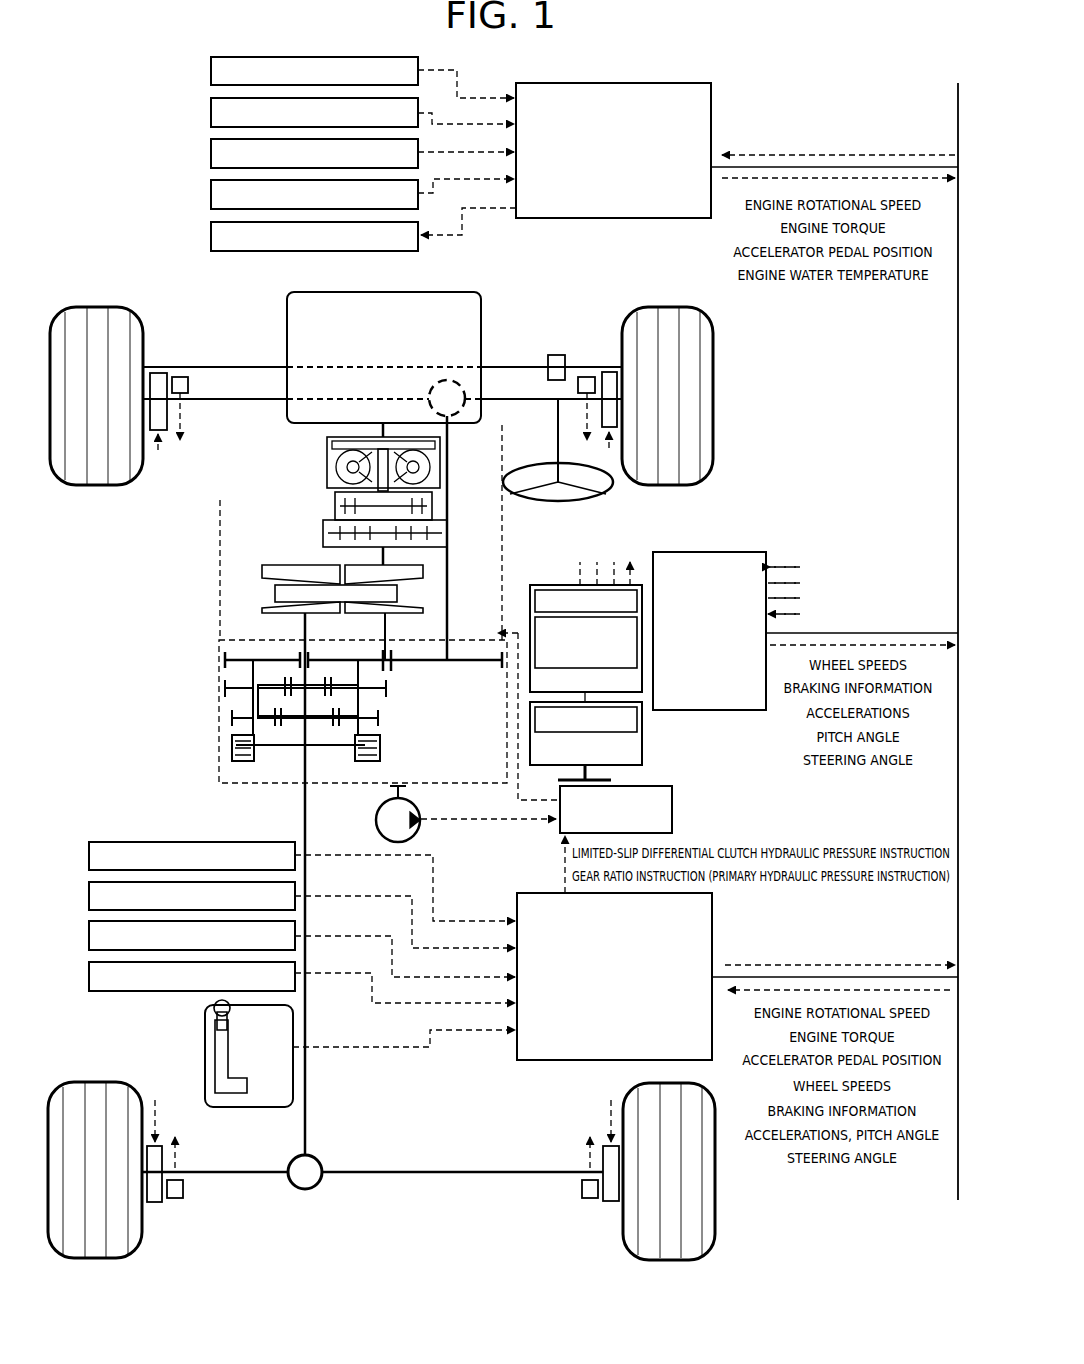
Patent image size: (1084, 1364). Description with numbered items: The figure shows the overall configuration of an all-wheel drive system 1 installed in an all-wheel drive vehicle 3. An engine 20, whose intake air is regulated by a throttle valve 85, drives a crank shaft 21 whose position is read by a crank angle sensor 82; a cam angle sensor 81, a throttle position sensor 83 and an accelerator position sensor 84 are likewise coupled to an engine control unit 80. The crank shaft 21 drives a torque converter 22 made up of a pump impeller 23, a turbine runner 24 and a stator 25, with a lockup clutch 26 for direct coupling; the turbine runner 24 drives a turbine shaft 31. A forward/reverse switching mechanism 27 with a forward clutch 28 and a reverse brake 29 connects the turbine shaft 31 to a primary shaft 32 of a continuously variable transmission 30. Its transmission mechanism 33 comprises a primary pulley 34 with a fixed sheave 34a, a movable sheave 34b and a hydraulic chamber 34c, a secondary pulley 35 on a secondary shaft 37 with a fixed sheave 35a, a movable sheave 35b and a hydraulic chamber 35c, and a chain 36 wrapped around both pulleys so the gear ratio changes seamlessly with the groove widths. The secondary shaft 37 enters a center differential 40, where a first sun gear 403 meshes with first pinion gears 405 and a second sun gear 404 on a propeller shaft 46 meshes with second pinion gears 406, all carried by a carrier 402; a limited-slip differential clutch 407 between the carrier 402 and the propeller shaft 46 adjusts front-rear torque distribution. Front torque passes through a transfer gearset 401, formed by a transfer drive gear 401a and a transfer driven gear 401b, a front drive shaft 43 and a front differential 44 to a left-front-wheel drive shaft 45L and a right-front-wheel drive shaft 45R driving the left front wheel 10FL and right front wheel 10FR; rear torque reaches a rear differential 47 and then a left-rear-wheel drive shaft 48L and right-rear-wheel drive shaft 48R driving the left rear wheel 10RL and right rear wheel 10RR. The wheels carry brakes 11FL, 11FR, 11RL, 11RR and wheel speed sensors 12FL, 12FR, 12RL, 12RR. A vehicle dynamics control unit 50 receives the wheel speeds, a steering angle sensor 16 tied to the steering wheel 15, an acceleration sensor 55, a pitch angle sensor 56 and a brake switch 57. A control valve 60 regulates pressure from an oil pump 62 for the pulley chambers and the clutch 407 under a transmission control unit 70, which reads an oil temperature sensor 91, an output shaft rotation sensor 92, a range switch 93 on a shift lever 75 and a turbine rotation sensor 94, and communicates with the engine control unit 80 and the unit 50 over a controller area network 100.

The all-wheel drive system 1 is at (168, 533).
The all-wheel drive vehicle 3 is at (136, 226).
The left front wheel 10FL is at (97, 304).
The right front wheel 10FR is at (663, 304).
The left rear wheel 10RL is at (95, 1262).
The right rear wheel 10RR is at (668, 1264).
The brake 11FL is at (156, 368).
The brake 11FR is at (606, 368).
The brake 11RL is at (150, 1205).
The brake 11RR is at (614, 1205).
The wheel speed sensor 12FL is at (180, 375).
The wheel speed sensor 12FR is at (576, 375).
The wheel speed sensor 12RL is at (176, 1200).
The wheel speed sensor 12RR is at (590, 1200).
The steering wheel 15 is at (534, 470).
The steering angle sensor 16 is at (549, 354).
The engine 20 is at (286, 326).
The crank shaft 21 is at (383, 434).
The torque converter 22 is at (294, 462).
The pump impeller 23 is at (362, 477).
The turbine runner 24 is at (328, 447).
The stator 25 is at (332, 465).
The lockup clutch 26 is at (418, 457).
The forward/reverse switching mechanism 27 is at (332, 521).
The forward clutch 28 is at (330, 509).
The reverse brake 29 is at (318, 540).
The continuously variable transmission 30 is at (320, 706).
The turbine shaft 31 is at (408, 483).
The primary shaft 32 is at (388, 559).
The transmission mechanism 33 is at (502, 655).
The primary pulley 34 is at (486, 598).
The fixed sheave 34a is at (408, 568).
The movable sheave 34b is at (408, 605).
The hydraulic chamber 34c is at (408, 614).
The secondary pulley 35 is at (267, 583).
The fixed sheave 35a is at (272, 610).
The movable sheave 35b is at (272, 575).
The hydraulic chamber 35c is at (298, 572).
The chain 36 is at (274, 597).
The secondary shaft 37 is at (300, 632).
The center differential 40 is at (227, 718).
The front drive shaft 43 is at (432, 448).
The front differential 44 is at (440, 379).
The left-front-wheel drive shaft 45L is at (248, 390).
The right-front-wheel drive shaft 45R is at (515, 390).
The propeller shaft 46 is at (306, 1078).
The rear differential 47 is at (298, 1160).
The left-rear-wheel drive shaft 48L is at (208, 1172).
The right-rear-wheel drive shaft 48R is at (490, 1164).
The vehicle dynamics control unit 50 is at (723, 546).
The acceleration sensor 55 is at (637, 606).
The pitch angle sensor 56 is at (637, 636).
The brake switch 57 is at (634, 730).
The control valve 60 is at (672, 808).
The oil pump 62 is at (376, 823).
The transmission control unit 70 is at (712, 932).
The shift lever 75 is at (212, 1010).
The engine control unit 80 is at (712, 100).
The cam angle sensor 81 is at (211, 72).
The crank angle sensor 82 is at (211, 113).
The throttle position sensor 83 is at (211, 154).
The accelerator position sensor 84 is at (211, 195).
The throttle valve 85 is at (211, 237).
The oil temperature sensor 91 is at (89, 856).
The output shaft rotation sensor 92 is at (89, 896).
The range switch 93 is at (89, 936).
The turbine rotation sensor 94 is at (89, 977).
The controller area network 100 is at (957, 1178).
The transfer gearset 401 is at (406, 672).
The transfer drive gear 401a is at (348, 658).
The transfer driven gear 401b is at (418, 660).
The carrier 402 is at (236, 688).
The first sun gear 403 is at (283, 650).
The second sun gear 404 is at (280, 746).
The first pinion gears 405 is at (356, 704).
The second pinion gears 406 is at (356, 722).
The limited-slip differential clutch 407 is at (386, 748).